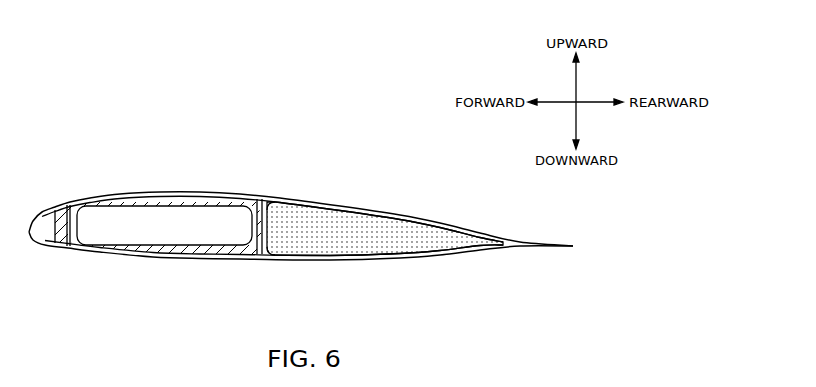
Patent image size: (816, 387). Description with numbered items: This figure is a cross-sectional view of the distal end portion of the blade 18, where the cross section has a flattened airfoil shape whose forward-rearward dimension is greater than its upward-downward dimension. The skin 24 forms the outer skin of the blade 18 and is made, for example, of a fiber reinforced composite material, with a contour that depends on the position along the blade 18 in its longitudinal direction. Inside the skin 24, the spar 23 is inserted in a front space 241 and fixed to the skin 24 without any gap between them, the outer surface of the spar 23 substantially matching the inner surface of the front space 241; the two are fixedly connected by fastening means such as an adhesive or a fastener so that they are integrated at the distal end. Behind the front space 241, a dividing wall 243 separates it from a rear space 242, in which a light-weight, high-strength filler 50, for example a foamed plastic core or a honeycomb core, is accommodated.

The blade 18 is at (428, 129).
The skin 24 is at (199, 190).
The front space 241 is at (133, 190).
The rear space 242 is at (349, 211).
The dividing wall 243 is at (279, 196).
The spar 23 is at (166, 248).
The filler 50 is at (349, 245).